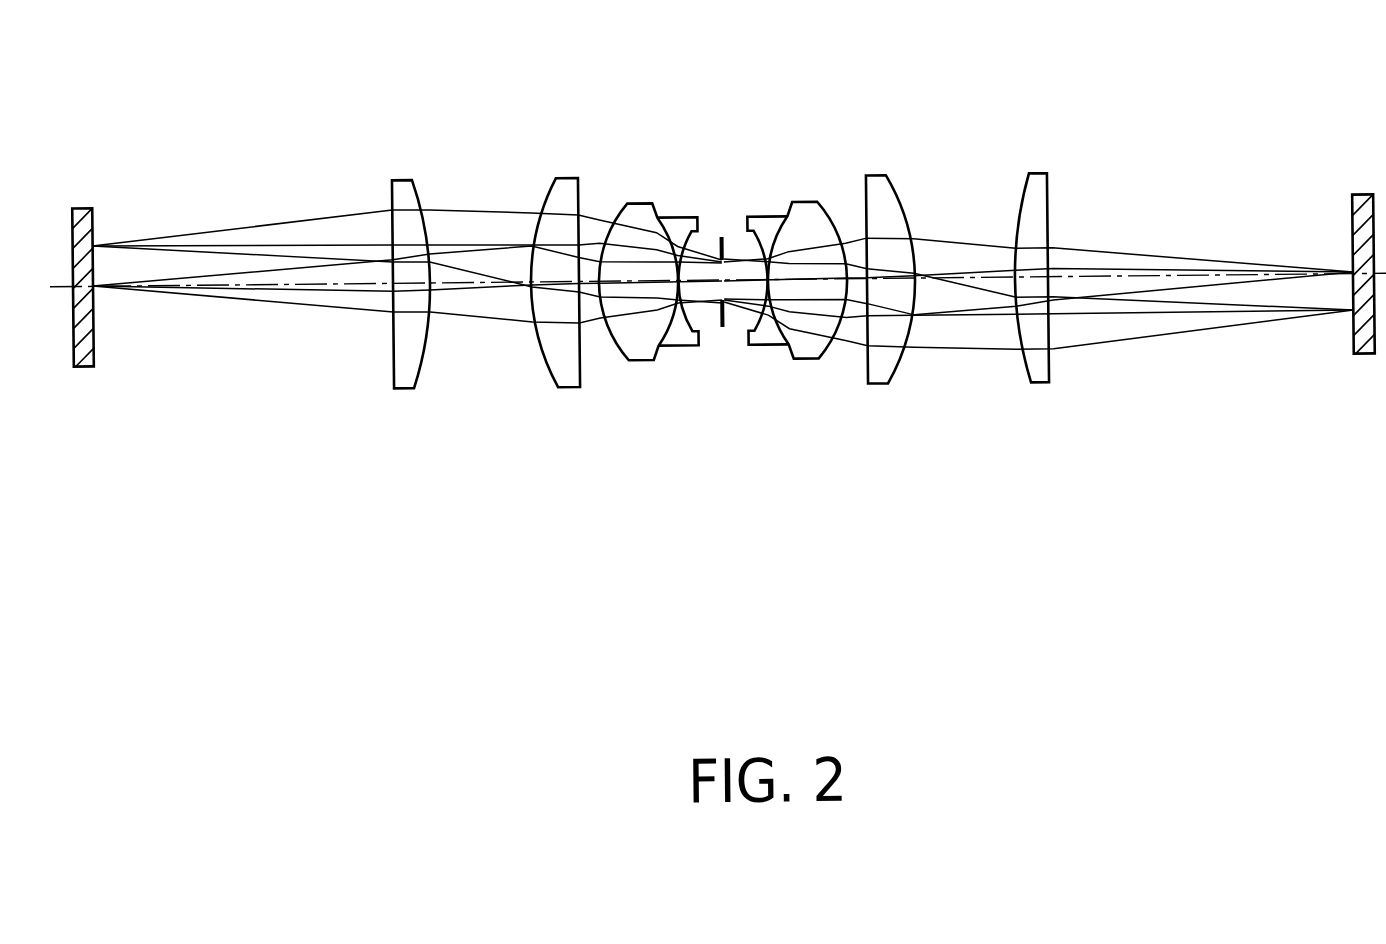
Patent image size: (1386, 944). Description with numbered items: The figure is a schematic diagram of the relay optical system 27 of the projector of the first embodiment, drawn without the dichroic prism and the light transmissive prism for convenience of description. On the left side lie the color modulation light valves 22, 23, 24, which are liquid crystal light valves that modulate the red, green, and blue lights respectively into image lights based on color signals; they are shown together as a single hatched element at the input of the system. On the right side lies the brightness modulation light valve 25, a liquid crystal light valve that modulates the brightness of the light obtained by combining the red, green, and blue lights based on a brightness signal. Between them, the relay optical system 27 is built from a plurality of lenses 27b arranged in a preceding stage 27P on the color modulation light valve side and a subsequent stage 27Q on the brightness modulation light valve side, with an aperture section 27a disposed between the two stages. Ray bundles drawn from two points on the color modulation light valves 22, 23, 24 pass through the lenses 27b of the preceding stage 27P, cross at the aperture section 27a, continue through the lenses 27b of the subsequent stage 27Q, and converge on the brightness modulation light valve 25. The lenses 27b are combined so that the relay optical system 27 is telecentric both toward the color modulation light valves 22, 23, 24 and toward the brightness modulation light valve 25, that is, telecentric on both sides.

The liquid crystal light valve 22 is at (134, 355).
The liquid crystal light valve 23 is at (83, 287).
The liquid crystal light valve 24 is at (84, 359).
The liquid crystal light valve 25 is at (1362, 358).
The relay optical system 27 is at (368, 60).
The preceding stage 27P is at (370, 396).
The subsequent stage 27Q is at (905, 266).
The aperture section 27a is at (723, 224).
The lenses 27b is at (874, 188).